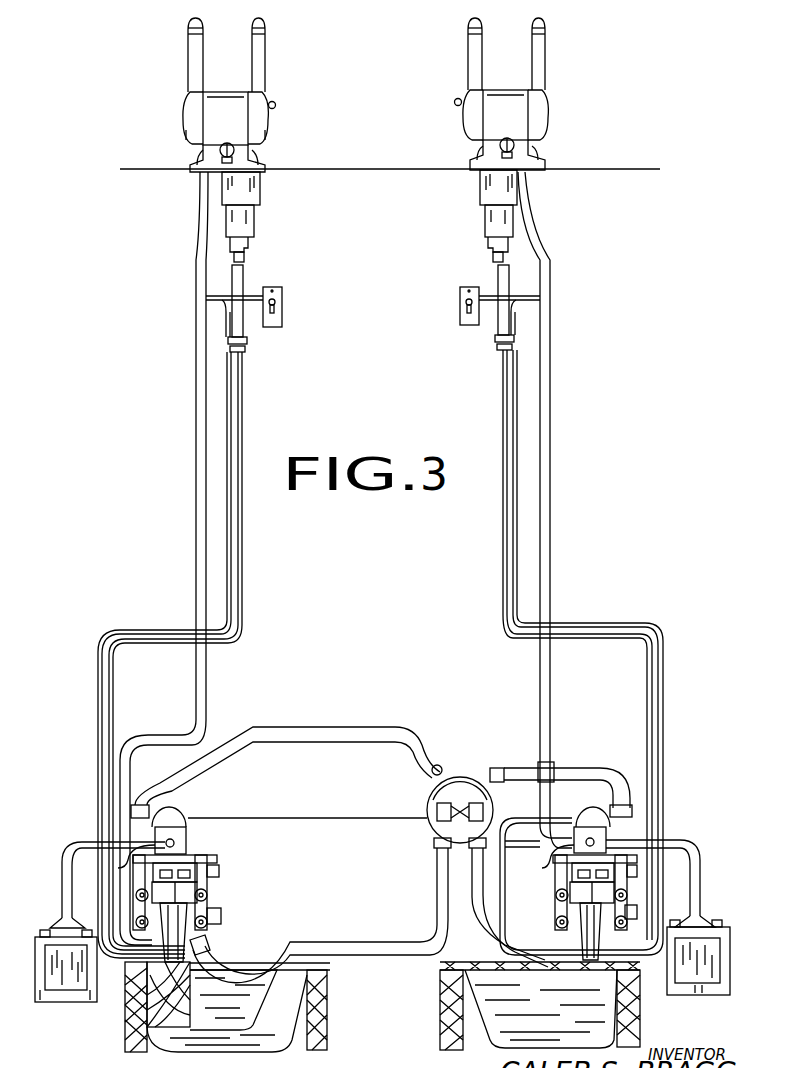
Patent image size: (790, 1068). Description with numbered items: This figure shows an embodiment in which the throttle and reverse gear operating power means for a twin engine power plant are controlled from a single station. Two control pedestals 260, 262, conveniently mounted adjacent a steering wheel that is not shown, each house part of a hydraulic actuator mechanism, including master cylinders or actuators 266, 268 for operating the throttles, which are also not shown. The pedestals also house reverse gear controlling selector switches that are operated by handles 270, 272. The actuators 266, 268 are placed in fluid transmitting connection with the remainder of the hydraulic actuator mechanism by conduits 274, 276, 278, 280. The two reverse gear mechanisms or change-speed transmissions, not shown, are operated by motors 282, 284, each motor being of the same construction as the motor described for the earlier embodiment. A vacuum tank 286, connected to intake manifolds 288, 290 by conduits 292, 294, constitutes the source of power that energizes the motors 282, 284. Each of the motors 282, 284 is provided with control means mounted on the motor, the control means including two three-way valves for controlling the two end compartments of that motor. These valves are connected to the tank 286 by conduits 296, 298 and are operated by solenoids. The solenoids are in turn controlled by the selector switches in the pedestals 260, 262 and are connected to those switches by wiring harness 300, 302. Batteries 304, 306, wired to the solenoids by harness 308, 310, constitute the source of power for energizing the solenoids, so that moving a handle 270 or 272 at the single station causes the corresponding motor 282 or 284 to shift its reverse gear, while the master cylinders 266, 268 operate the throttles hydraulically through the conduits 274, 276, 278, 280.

The control pedestal 260 is at (243, 152).
The control pedestal 262 is at (522, 145).
The master cylinder 266 is at (243, 191).
The master cylinder 268 is at (488, 188).
The handle 270 is at (193, 103).
The handle 272 is at (473, 116).
The conduit 274 is at (230, 390).
The conduit 276 is at (240, 408).
The conduit 278 is at (515, 380).
The conduit 280 is at (505, 407).
The motor 282 is at (190, 878).
The motor 284 is at (605, 875).
The vacuum tank 286 is at (455, 790).
The intake manifold 288 is at (168, 812).
The intake manifold 290 is at (595, 800).
The conduit 292 is at (290, 732).
The conduit 294 is at (560, 770).
The conduit 296 is at (325, 945).
The conduit 298 is at (478, 855).
The wiring harness 300 is at (198, 565).
The wiring harness 302 is at (547, 565).
The battery 304 is at (57, 992).
The battery 306 is at (712, 950).
The harness 308 is at (68, 848).
The harness 310 is at (697, 870).